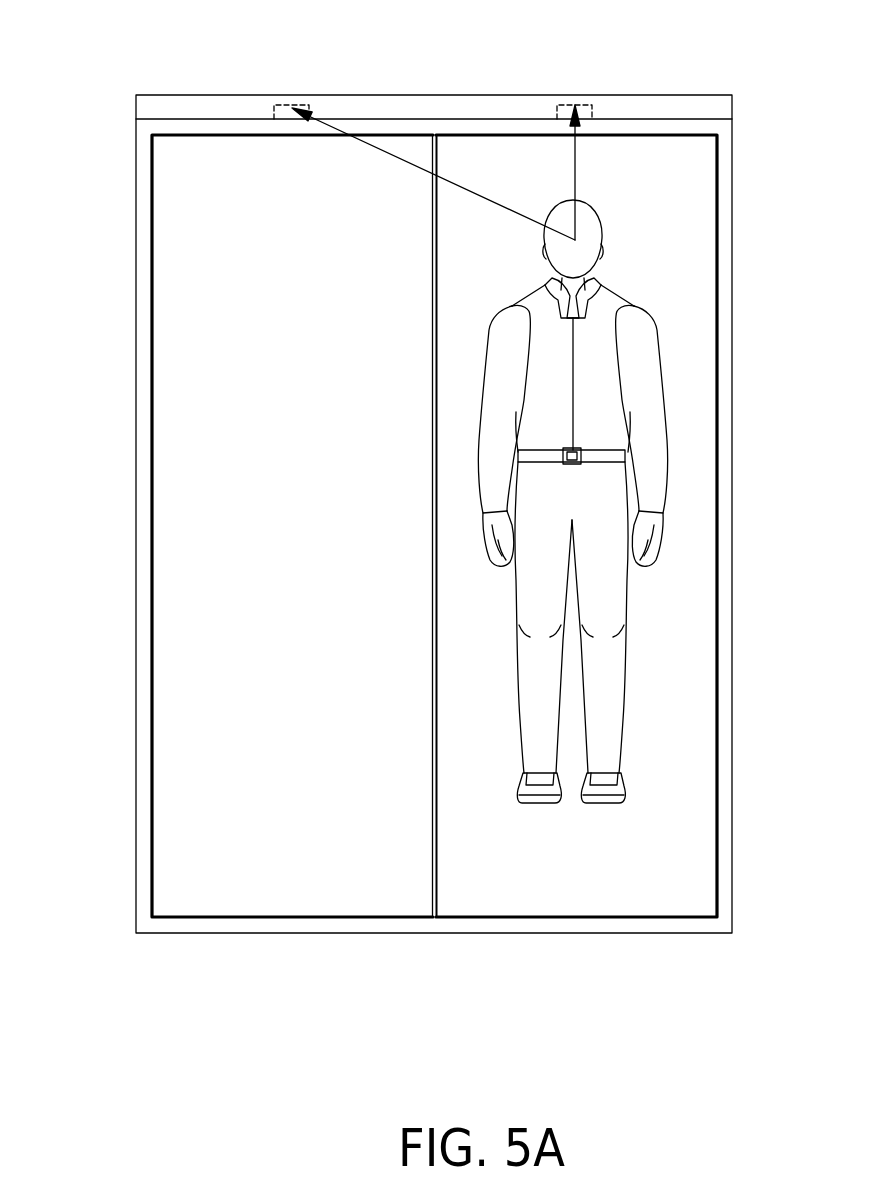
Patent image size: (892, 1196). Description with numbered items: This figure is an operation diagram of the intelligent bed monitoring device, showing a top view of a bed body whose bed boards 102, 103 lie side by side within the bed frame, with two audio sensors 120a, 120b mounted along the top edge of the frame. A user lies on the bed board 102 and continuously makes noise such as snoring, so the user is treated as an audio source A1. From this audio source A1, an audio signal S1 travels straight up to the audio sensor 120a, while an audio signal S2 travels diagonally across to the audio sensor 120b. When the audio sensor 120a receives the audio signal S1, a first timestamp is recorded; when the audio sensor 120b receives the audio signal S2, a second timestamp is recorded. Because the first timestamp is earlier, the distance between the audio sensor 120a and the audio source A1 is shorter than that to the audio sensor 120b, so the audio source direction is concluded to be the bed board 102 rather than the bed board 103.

The audio sensor 120a is at (580, 105).
The audio sensor 120b is at (292, 105).
The bed board 102 is at (680, 485).
The bed board 103 is at (188, 485).
The audio source A1 is at (575, 241).
The audio signal S1 is at (589, 172).
The audio signal S2 is at (433, 174).